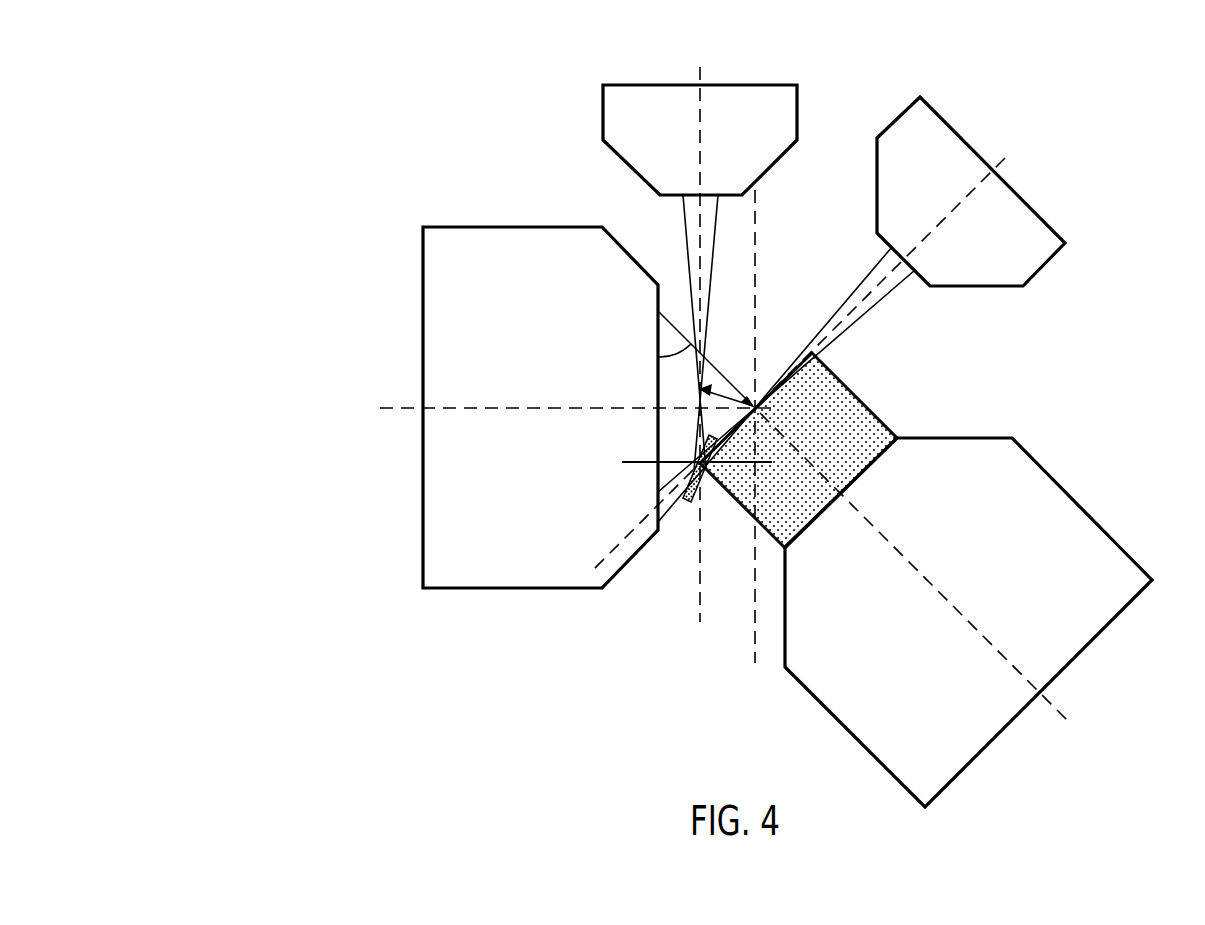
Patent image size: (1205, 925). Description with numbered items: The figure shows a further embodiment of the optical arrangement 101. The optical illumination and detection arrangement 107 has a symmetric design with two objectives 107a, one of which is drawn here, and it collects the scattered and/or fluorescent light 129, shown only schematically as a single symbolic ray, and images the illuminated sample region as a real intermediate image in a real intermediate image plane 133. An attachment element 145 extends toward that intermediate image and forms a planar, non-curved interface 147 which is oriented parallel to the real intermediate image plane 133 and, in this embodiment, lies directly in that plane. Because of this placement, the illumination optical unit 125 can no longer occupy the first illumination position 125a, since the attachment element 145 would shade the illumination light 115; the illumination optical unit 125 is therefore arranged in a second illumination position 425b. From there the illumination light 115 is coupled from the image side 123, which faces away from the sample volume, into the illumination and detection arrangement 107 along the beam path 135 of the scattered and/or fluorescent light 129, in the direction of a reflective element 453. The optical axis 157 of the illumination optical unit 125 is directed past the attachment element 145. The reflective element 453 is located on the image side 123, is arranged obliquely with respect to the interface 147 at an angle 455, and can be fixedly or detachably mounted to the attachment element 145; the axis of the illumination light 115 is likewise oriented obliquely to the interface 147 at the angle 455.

The optical arrangement 101 is at (1136, 214).
The optical illumination and detection arrangement 107 is at (490, 464).
The objective 107a is at (660, 590).
The illumination light 115 is at (684, 223).
The image side 123 is at (678, 617).
The illumination optical unit 125 is at (834, 156).
The first illumination position 125a is at (968, 140).
The second illumination position 425b is at (747, 85).
The scattered and/or fluorescent light 129 is at (650, 360).
The beam path 135 is at (659, 359).
The real intermediate image plane 133 is at (945, 216).
The attachment element 145 is at (837, 395).
The interface 147 is at (803, 351).
The optical axis of the illumination optical unit 157 is at (700, 130).
The reflective element 453 is at (707, 487).
The angle 455 is at (737, 398).